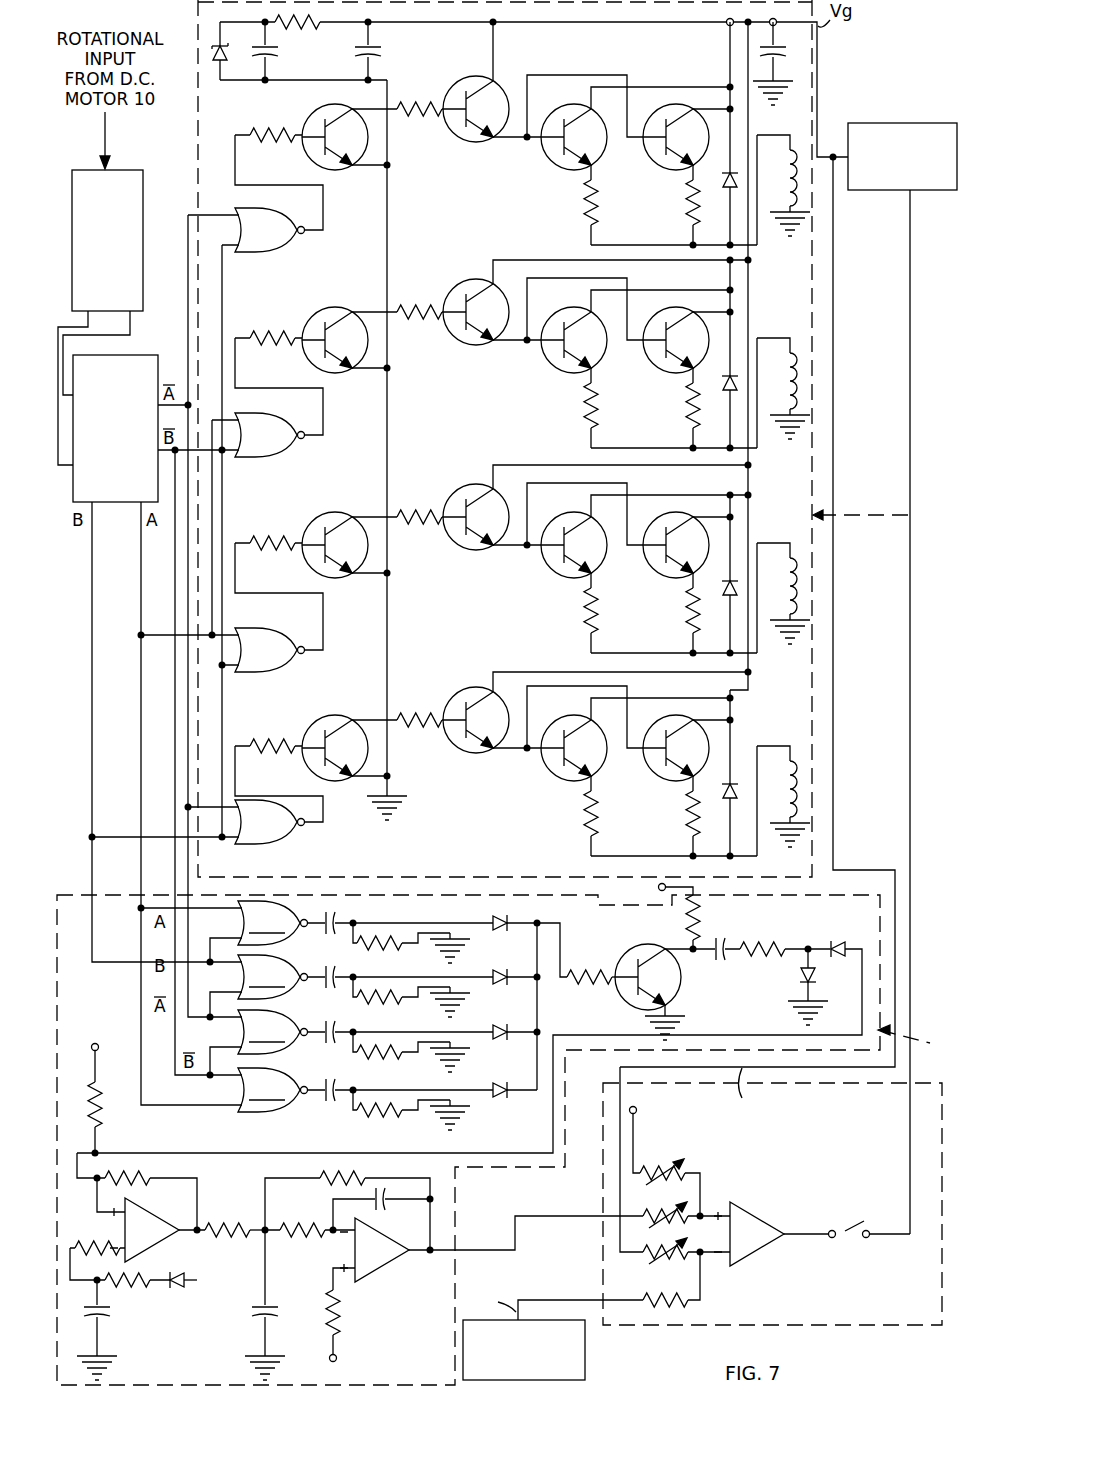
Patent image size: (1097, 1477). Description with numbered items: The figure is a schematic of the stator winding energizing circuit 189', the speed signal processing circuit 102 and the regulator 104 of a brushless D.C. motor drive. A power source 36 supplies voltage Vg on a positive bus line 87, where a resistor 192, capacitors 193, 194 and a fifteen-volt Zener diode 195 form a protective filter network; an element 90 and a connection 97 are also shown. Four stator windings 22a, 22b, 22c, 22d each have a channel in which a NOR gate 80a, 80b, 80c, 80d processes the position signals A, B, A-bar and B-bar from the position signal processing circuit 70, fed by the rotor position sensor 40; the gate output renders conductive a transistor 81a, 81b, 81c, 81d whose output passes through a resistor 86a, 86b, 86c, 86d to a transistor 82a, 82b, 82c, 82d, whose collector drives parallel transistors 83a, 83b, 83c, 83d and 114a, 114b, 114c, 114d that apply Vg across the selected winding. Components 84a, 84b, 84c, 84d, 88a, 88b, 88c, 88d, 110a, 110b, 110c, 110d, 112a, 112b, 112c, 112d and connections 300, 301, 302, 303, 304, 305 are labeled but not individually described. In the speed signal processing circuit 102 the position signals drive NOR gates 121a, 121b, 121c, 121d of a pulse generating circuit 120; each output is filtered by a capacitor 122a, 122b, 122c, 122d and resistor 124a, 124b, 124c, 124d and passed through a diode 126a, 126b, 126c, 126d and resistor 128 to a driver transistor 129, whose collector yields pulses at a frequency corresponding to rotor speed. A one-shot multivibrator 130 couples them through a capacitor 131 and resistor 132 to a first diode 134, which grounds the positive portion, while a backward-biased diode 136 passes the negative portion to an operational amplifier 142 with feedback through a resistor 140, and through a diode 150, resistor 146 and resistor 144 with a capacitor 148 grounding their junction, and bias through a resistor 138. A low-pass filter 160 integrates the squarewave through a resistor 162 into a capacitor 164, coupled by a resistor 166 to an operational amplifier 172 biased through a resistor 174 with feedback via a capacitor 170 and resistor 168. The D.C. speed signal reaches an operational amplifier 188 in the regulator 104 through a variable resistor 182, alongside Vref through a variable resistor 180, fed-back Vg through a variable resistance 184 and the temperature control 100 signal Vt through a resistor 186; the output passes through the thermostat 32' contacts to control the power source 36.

The stator winding 22a is at (798, 787).
The stator winding 22b is at (800, 178).
The stator winding 22c is at (798, 384).
The stator winding 22d is at (798, 586).
The thermostat 32' is at (870, 1244).
The power source 36 is at (922, 191).
The rotor position sensor 40 is at (143, 190).
The position signal processing circuit 70 is at (122, 503).
The NOR gate 80a is at (277, 843).
The NOR gate 80b is at (277, 251).
The NOR gate 80c is at (277, 456).
The NOR gate 80d is at (277, 671).
The transistor 81a is at (338, 781).
The transistor 81b is at (337, 170).
The transistor 81c is at (337, 373).
The transistor 81d is at (337, 578).
The transistor 82a is at (473, 754).
The transistor 82b is at (469, 146).
The transistor 82c is at (469, 347).
The transistor 82d is at (469, 552).
The transistor 83a is at (556, 774).
The transistor 83b is at (553, 163).
The transistor 83c is at (553, 366).
The transistor 83d is at (553, 571).
The resistor 84a is at (268, 741).
The resistor 84b is at (278, 130).
The resistor 84c is at (278, 333).
The resistor 84d is at (278, 538).
The resistor 86a is at (415, 714).
The resistor 86b is at (406, 116).
The resistor 86c is at (415, 306).
The resistor 86d is at (415, 511).
The positive bus line 87 is at (588, 24).
The diode 88a is at (722, 787).
The diode 88b is at (722, 176).
The diode 88c is at (722, 379).
The diode 88d is at (722, 584).
The capacitor 90 is at (785, 50).
The supply line 97 is at (752, 530).
The temperature control 100 is at (586, 1357).
The speed signal processing circuit 102 is at (923, 1040).
The regulator 104 is at (928, 1321).
The resistor 110a is at (588, 825).
The resistor 110b is at (588, 214).
The resistor 110c is at (588, 417).
The resistor 110d is at (588, 622).
The resistor 112a is at (690, 825).
The resistor 112b is at (690, 214).
The resistor 112c is at (690, 417).
The resistor 112d is at (690, 622).
The transistor 114a is at (652, 771).
The transistor 114b is at (652, 160).
The transistor 114c is at (652, 363).
The transistor 114d is at (652, 568).
The pulse generating circuit 120 is at (378, 1023).
The NOR gate 121a is at (273, 923).
The NOR gate 121b is at (273, 977).
The NOR gate 121c is at (273, 1032).
The NOR gate 121d is at (273, 1090).
The capacitor 122a is at (330, 917).
The capacitor 122b is at (338, 952).
The capacitor 122c is at (333, 1042).
The capacitor 122d is at (333, 1102).
The resistor 124a is at (385, 932).
The resistor 124b is at (366, 1000).
The resistor 124c is at (368, 1060).
The resistor 124d is at (393, 1117).
The diode 126a is at (500, 916).
The diode 126b is at (498, 969).
The diode 126c is at (501, 1040).
The diode 126d is at (500, 1098).
The resistor 128 is at (592, 969).
The driver transistor 129 is at (622, 953).
The one-shot multivibrator circuit 130 is at (476, 1017).
The capacitor 131 is at (722, 940).
The resistor 132 is at (765, 940).
The first diode 134 is at (797, 978).
The backward-biased diode 136 is at (841, 940).
The resistor 138 is at (102, 1100).
The resistor 140 is at (140, 1172).
The operational amplifier 142 is at (172, 1210).
The resistor 144 is at (92, 1246).
The resistor 146 is at (128, 1292).
The capacitor 148 is at (110, 1318).
The diode 150 is at (178, 1290).
The low-pass filter circuit 160 is at (354, 1270).
The resistor 162 is at (250, 1222).
The capacitor 164 is at (290, 1310).
The resistor 166 is at (307, 1222).
The resistor 168 is at (345, 1175).
The capacitor 170 is at (385, 1204).
The operational amplifier 172 is at (388, 1262).
The resistor 174 is at (340, 1310).
The variable resistor 180 is at (661, 1160).
The variable resistor 182 is at (640, 1198).
The variable resistance 184 is at (640, 1258).
The resistor 186 is at (652, 1295).
The operational amplifier 188 is at (768, 1221).
The stator winding energizing circuit 189' is at (885, 515).
The resistor 192 is at (297, 30).
The capacitor 193 is at (375, 51).
The capacitor 194 is at (275, 53).
The Zener diode 195 is at (214, 62).
The signal line B 300 is at (90, 836).
The signal line A 301 is at (140, 790).
The signal line B-bar 302 is at (173, 745).
The signal line A-bar 303 is at (187, 858).
The supply line 304 is at (836, 840).
The supply line 305 is at (911, 805).